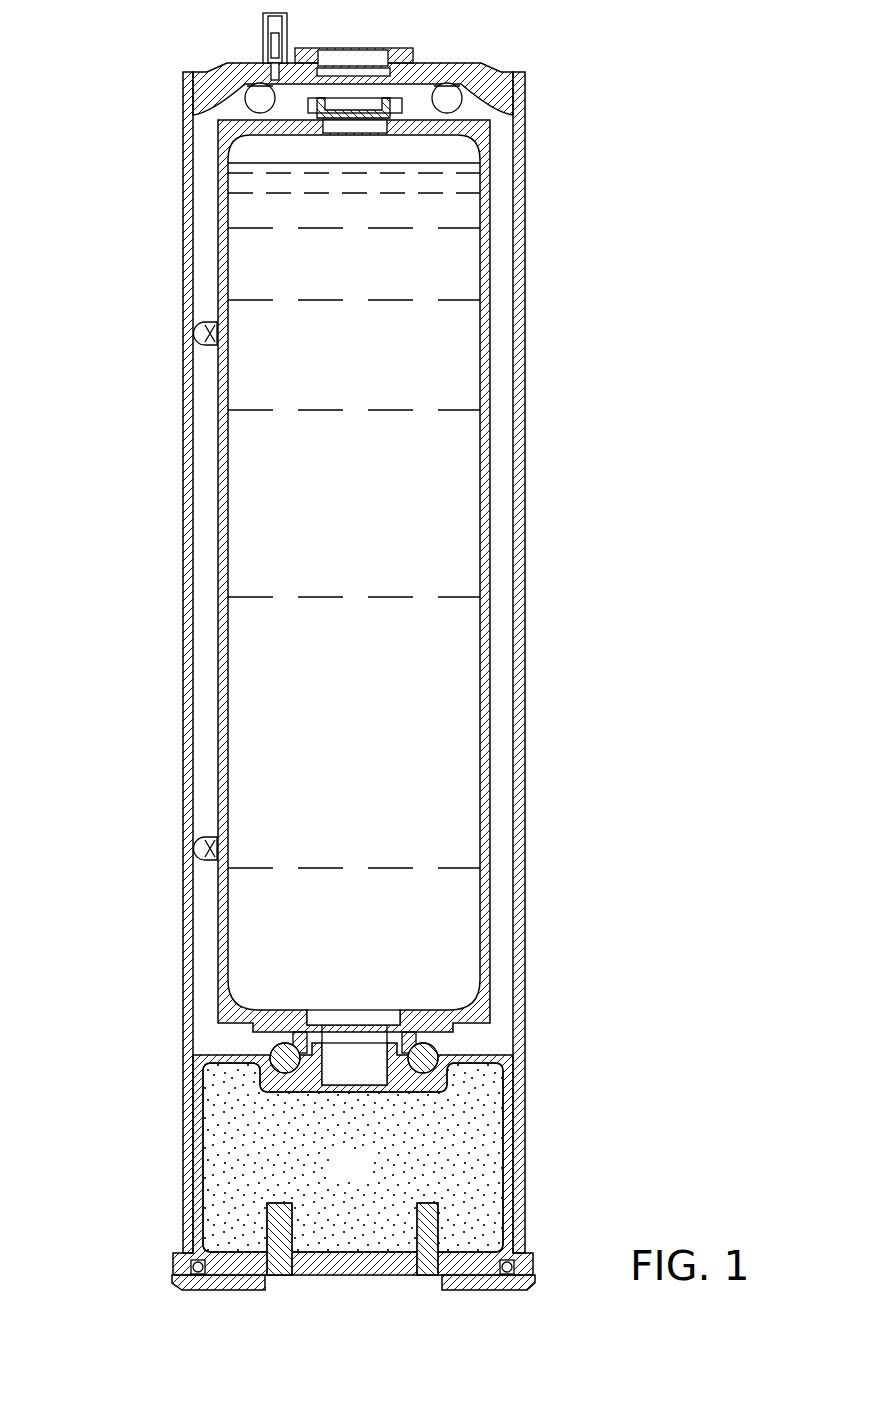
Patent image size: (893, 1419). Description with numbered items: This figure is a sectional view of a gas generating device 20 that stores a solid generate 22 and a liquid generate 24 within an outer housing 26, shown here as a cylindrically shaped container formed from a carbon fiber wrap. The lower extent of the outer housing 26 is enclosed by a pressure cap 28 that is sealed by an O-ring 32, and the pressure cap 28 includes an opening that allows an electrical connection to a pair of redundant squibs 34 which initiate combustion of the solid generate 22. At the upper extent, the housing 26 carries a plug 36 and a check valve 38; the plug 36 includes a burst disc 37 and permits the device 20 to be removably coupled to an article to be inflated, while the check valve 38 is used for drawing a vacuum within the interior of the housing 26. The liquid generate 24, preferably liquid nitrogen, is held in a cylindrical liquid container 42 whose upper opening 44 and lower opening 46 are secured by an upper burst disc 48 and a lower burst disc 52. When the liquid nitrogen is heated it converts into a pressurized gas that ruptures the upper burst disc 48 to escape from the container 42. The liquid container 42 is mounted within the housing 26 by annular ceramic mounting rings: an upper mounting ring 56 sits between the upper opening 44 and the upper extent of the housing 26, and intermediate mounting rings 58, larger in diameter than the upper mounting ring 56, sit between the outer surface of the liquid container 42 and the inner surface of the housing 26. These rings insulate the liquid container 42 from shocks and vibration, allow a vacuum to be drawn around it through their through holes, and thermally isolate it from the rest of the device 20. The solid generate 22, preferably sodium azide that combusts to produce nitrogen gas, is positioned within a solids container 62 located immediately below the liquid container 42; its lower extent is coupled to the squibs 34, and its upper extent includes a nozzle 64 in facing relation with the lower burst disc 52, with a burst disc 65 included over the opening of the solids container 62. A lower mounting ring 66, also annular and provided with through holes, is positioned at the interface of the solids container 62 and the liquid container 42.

The gas generating device 20 is at (673, 238).
The solid generate 22 is at (337, 1176).
The liquid generate 24 is at (340, 509).
The outer housing 26 is at (190, 491).
The pressure cap 28 is at (515, 1286).
The O-ring 32 is at (197, 1262).
The redundant squibs 34 is at (432, 1222).
The plug 36 is at (357, 48).
The burst disc 37 is at (333, 62).
The check valve 38 is at (268, 25).
The liquid container 42 is at (225, 690).
The upper opening 44 is at (348, 107).
The lower opening 46 is at (307, 1055).
The upper burst disc 48 is at (370, 108).
The lower burst disc 52 is at (350, 1017).
The upper mounting ring 56 is at (253, 100).
The intermediate mounting rings 58 is at (200, 332).
The solids container 62 is at (215, 1115).
The nozzle 64 is at (350, 1057).
The burst disc 65 is at (342, 1073).
The lower mounting ring 66 is at (272, 1052).